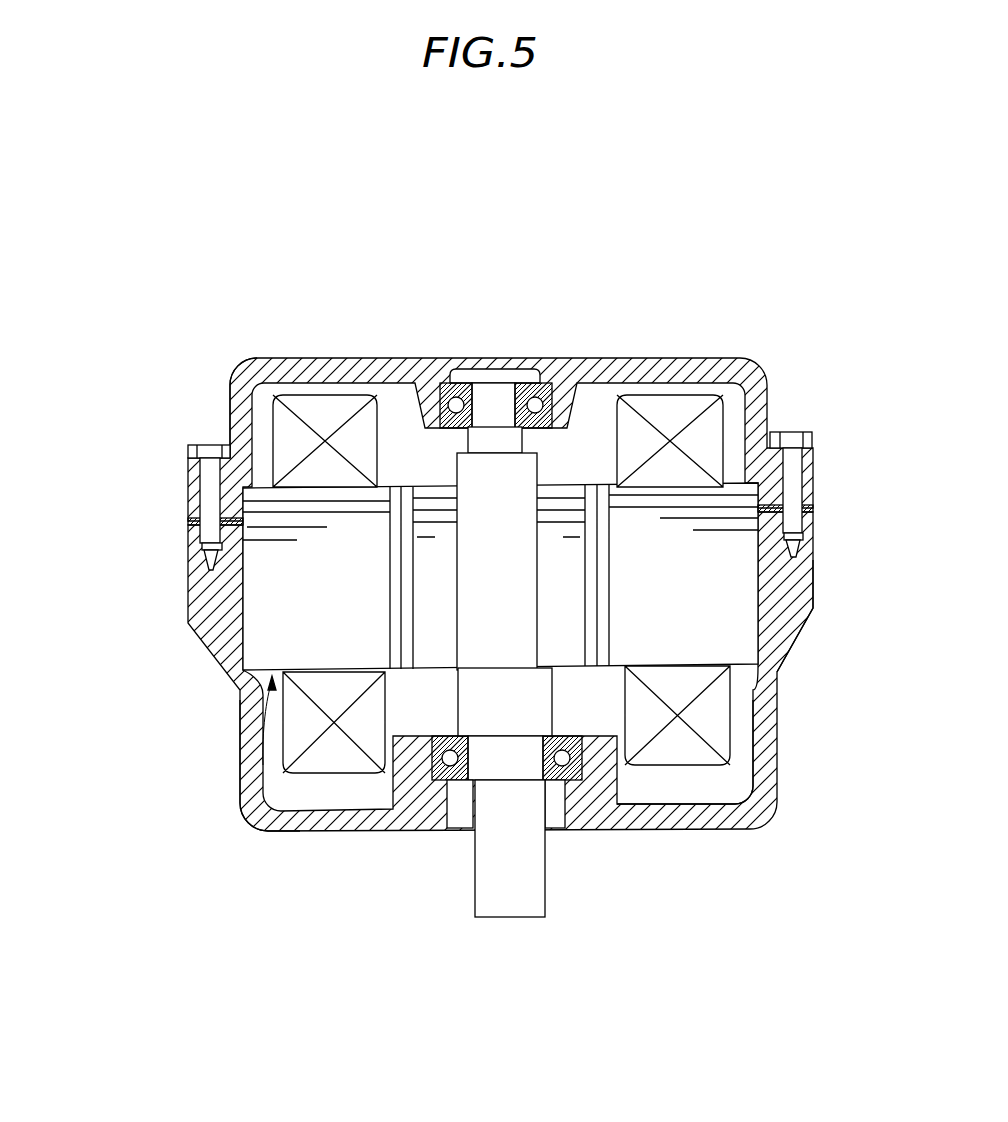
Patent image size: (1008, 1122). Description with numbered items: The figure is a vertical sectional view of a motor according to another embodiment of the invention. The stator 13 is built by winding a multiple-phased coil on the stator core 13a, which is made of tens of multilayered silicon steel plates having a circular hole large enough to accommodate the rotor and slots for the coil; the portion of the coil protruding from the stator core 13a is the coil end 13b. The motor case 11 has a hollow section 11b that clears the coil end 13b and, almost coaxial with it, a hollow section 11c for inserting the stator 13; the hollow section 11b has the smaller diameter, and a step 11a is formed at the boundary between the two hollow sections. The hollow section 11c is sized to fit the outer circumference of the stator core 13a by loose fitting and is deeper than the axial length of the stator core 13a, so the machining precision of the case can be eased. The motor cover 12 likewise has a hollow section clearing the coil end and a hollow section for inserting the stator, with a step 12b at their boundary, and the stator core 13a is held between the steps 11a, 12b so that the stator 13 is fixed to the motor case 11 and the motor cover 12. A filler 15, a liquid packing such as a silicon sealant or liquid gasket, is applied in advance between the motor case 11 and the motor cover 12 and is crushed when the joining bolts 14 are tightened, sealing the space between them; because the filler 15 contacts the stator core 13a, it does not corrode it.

The motor case 11 is at (346, 823).
The step 11a is at (237, 691).
The hollow section 11b is at (688, 787).
The hollow section 11c is at (770, 605).
The motor cover 12 is at (648, 362).
The step 12b is at (230, 414).
The stator 13 is at (240, 788).
The stator core 13a is at (278, 610).
The coil end 13b is at (327, 413).
The joining bolt 14 is at (792, 431).
The filler 15 is at (188, 522).